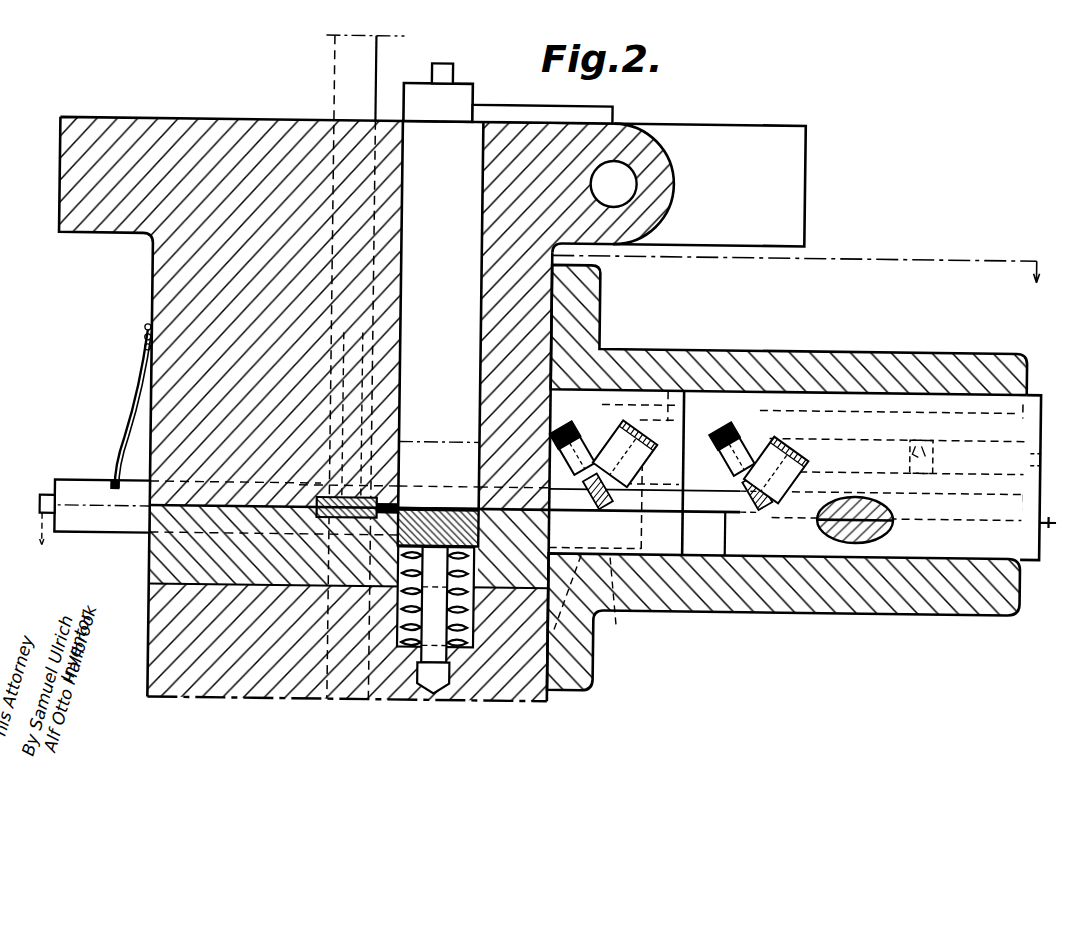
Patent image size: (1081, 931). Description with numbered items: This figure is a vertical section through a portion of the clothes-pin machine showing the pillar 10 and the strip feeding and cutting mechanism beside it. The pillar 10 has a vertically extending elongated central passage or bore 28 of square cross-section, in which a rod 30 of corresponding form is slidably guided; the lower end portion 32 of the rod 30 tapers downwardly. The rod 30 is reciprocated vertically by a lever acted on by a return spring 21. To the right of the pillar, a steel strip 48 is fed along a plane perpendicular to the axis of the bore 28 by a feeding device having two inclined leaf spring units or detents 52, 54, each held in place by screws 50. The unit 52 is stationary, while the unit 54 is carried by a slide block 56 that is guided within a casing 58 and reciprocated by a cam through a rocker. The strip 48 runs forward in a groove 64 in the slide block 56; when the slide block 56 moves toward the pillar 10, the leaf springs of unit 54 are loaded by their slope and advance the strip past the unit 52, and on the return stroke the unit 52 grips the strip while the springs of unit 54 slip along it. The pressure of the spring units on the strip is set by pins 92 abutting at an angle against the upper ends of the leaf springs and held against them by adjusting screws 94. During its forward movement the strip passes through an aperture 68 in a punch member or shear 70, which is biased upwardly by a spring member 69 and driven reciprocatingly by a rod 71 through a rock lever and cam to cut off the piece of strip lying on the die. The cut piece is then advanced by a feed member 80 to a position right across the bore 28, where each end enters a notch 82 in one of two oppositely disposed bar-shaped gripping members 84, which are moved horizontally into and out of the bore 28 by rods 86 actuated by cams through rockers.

The pillar 10 is at (624, 132).
The return spring 21 is at (132, 419).
The central passage or bore 28 is at (313, 130).
The rod 30 is at (336, 52).
The lower end portion 32 is at (390, 380).
The steel strip 48 is at (1050, 509).
The screws 50 is at (719, 426).
The leaf spring unit 52 is at (615, 506).
The leaf spring unit 54 is at (768, 512).
The slide block 56 is at (997, 413).
The casing 58 is at (898, 434).
The groove 64 is at (868, 524).
The aperture 68 is at (461, 502).
The spring member 69 is at (475, 620).
The punch member or shear 70 is at (456, 96).
The rod 71 is at (433, 72).
The feed member 80 is at (422, 438).
The notch 82 is at (387, 418).
The gripping members 84 is at (84, 489).
The rods 86 is at (48, 501).
The pins 92 is at (932, 390).
The adjusting screws 94 is at (650, 425).